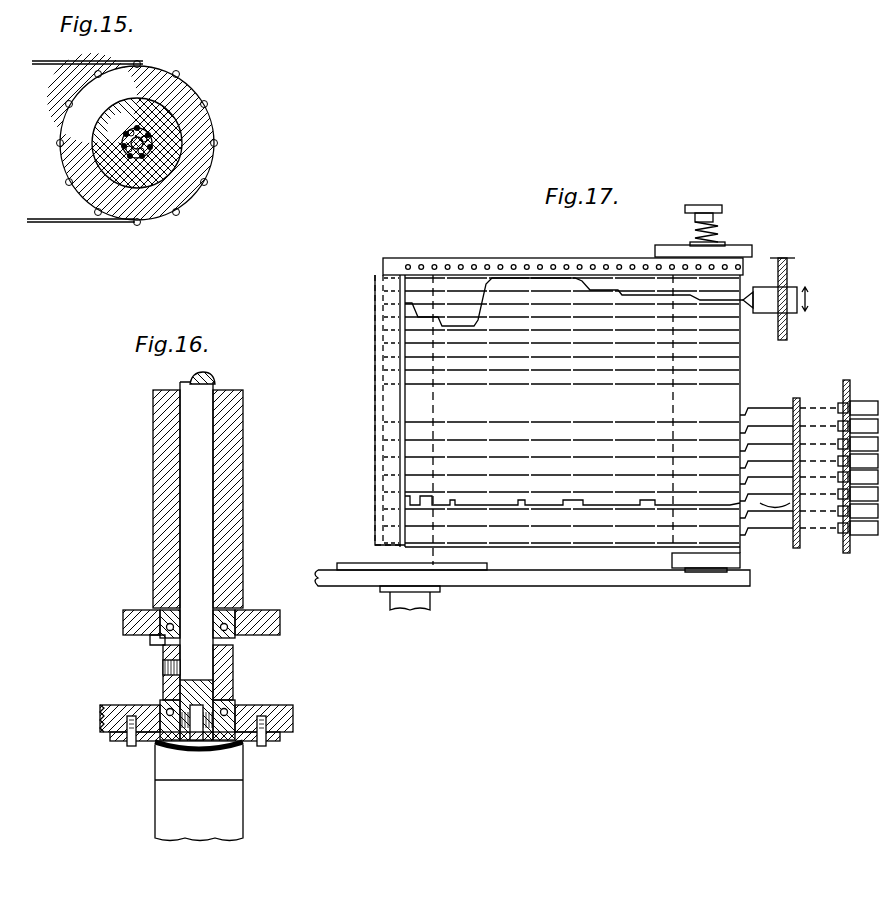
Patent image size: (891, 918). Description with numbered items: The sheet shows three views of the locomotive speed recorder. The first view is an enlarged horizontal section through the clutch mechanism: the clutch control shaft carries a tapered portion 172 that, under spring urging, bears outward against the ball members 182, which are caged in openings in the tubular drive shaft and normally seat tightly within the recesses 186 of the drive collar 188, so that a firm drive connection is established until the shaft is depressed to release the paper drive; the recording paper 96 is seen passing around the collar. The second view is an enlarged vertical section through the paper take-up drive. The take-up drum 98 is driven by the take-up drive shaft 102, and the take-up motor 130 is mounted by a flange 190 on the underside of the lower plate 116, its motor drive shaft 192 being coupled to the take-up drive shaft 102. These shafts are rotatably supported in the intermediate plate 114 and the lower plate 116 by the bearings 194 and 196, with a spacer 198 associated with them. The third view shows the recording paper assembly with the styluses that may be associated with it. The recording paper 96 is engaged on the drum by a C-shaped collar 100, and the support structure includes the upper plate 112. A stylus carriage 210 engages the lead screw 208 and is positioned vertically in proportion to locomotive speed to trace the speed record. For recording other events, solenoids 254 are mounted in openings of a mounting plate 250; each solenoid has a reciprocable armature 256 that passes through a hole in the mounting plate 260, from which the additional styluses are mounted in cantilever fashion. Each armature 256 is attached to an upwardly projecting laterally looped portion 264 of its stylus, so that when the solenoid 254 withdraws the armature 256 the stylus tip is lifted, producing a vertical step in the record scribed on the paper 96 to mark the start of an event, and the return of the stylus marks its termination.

In FIG. 15, the recording paper 96 is at (60, 222).
In FIG. 17, the recording paper 96 is at (630, 270).
In FIG. 15, the tapered portion 172 is at (90, 128).
In FIG. 15, the ball members 182 is at (182, 110).
In FIG. 15, the drive collar 188 is at (170, 178).
In FIG. 15, the recesses 186 is at (128, 158).
In FIG. 16, the take-up drive shaft 102 is at (200, 470).
In FIG. 16, the drum 98 is at (232, 488).
In FIG. 16, the intermediate plate 114 is at (262, 612).
In FIG. 16, the bearing 194 is at (163, 640).
In FIG. 16, the spacer 198 is at (228, 678).
In FIG. 16, the bearing 196 is at (160, 704).
In FIG. 16, the lower plate 116 is at (270, 710).
In FIG. 16, the flange 190 is at (280, 738).
In FIG. 16, the motor drive shaft 192 is at (165, 748).
In FIG. 16, the take-up motor 130 is at (238, 790).
In FIG. 17, the C-shaped collar 100 is at (388, 402).
In FIG. 17, the upper plate 112 is at (665, 250).
In FIG. 17, the stylus carriage 210 is at (768, 288).
In FIG. 17, the lead screw 208 is at (788, 270).
In FIG. 17, the laterally looped portion 264 is at (760, 408).
In FIG. 17, the reciprocable armature 256 is at (790, 408).
In FIG. 17, the solenoids 254 is at (865, 402).
In FIG. 17, the mounting plate 260 is at (796, 548).
In FIG. 17, the mounting plate 250 is at (848, 550).